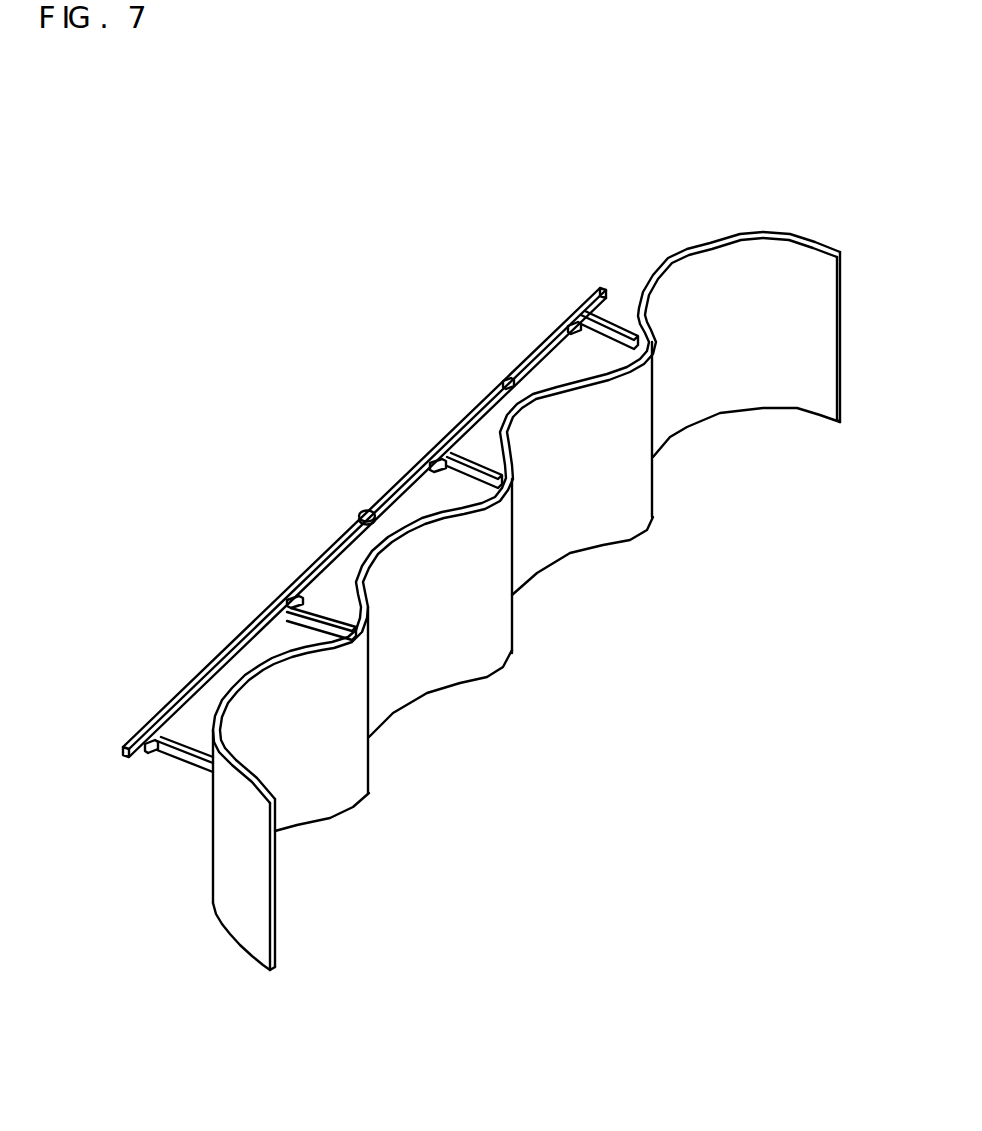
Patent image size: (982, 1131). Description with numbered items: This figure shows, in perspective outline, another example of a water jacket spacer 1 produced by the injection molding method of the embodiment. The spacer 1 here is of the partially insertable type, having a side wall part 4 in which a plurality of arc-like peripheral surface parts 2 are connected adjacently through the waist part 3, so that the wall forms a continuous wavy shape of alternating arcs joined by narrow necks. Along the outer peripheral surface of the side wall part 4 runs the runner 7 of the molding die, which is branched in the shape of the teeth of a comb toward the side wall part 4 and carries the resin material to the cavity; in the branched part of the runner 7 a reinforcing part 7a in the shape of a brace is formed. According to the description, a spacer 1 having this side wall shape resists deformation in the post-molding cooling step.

The spacer 1 is at (805, 150).
The arc-like peripheral surface part 2 is at (553, 443).
The waist part 3 is at (640, 413).
The side wall part 4 is at (337, 280).
The runner 7 is at (184, 689).
The reinforcing part 7a is at (153, 752).